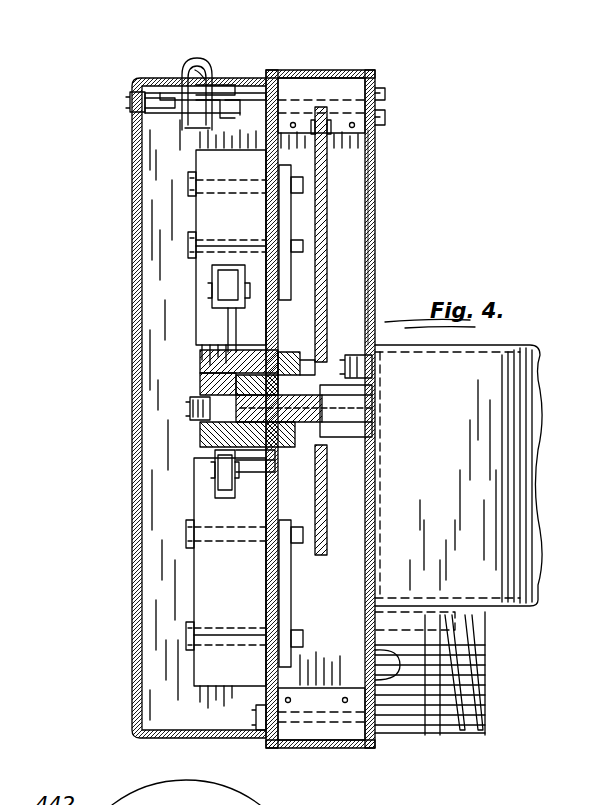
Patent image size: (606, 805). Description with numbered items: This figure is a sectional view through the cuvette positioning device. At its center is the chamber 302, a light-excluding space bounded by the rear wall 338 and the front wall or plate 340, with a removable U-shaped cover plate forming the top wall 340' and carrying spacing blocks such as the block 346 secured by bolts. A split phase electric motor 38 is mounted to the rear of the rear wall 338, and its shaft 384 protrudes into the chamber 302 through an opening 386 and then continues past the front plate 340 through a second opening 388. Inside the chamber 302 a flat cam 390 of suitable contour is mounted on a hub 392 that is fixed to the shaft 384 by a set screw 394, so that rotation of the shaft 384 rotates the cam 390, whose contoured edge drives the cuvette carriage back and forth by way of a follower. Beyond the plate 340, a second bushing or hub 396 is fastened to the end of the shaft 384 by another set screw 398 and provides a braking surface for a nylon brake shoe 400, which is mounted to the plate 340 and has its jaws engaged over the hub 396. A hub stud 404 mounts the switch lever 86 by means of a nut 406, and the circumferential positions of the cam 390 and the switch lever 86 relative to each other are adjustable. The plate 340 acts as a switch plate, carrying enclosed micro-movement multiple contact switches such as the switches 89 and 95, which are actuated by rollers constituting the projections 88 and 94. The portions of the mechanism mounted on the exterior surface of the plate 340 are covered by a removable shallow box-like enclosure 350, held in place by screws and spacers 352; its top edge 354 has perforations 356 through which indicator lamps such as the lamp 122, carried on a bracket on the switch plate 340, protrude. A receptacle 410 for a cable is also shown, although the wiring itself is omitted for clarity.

The split phase electric motor 38 is at (500, 461).
The switch lever 86 is at (226, 336).
The projection 88 is at (222, 487).
The switch 89 is at (192, 590).
The projection 94 is at (216, 283).
The switch 95 is at (192, 220).
The indicator lamp 122 is at (205, 70).
The chamber 302 is at (378, 228).
The rear wall 338 is at (378, 263).
The front wall or plate 340 is at (235, 409).
The top wall 340' is at (326, 393).
The spacing block 346 is at (378, 85).
The box-like enclosure 350 is at (135, 325).
The screws and spacers 352 is at (132, 100).
The top edge 354 is at (252, 76).
The perforations 356 is at (170, 80).
The shaft 384 is at (362, 420).
The opening 386 is at (375, 373).
The opening 388 is at (285, 355).
The flat cam 390 is at (367, 178).
The hub 392 is at (322, 470).
The set screw 394 is at (321, 336).
The bushing or hub 396 is at (220, 430).
The set screw 398 is at (240, 383).
The nylon brake shoe 400 is at (263, 463).
The hub stud 404 is at (190, 408).
The nut 406 is at (200, 383).
The receptacle 410 is at (486, 690).